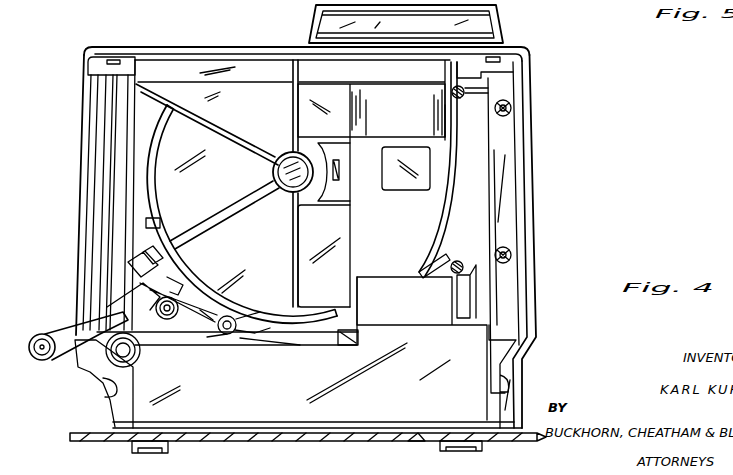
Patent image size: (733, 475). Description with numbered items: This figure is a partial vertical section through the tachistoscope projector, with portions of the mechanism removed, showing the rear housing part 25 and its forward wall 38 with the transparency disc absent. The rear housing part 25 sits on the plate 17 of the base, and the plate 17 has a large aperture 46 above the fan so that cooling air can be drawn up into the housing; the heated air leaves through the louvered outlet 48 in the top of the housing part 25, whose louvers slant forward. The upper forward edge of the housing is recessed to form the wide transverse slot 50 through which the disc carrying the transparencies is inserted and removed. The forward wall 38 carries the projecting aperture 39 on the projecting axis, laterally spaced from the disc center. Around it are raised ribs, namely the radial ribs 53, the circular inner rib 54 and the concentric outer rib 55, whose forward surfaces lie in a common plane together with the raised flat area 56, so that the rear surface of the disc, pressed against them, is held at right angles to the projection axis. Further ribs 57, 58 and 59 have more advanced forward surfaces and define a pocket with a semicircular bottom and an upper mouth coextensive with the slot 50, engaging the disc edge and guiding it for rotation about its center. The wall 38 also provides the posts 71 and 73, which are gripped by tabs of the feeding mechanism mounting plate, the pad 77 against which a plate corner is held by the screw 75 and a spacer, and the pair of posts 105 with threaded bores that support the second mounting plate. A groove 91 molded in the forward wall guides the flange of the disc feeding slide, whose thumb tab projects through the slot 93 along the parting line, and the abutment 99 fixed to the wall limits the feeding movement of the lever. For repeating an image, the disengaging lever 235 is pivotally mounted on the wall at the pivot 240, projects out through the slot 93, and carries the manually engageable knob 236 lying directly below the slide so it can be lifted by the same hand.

The plate 17 is at (512, 441).
The rear housing part 25 is at (528, 185).
The forward wall 38 is at (194, 165).
The projecting aperture 39 is at (410, 182).
The large aperture 46 is at (413, 441).
The louvered outlet 48 is at (486, 26).
The transverse slot 50 is at (141, 47).
The radial ribs 53 is at (226, 213).
The circular inner rib 54 is at (273, 174).
The concentric outer rib 55 is at (211, 286).
The raised flat area 56 is at (394, 264).
The rib 57 is at (146, 223).
The rib 58 is at (333, 343).
The rib 59 is at (443, 234).
The post 71 is at (463, 266).
The post 73 is at (463, 98).
The screw 75 is at (236, 336).
The pad 77 is at (226, 336).
The groove 91 is at (97, 209).
The slot 93 is at (84, 90).
The abutment 99 is at (162, 284).
The posts 105 is at (512, 109).
The disengaging lever 235 is at (63, 312).
The knob 236 is at (46, 361).
The pivot 240 is at (165, 320).